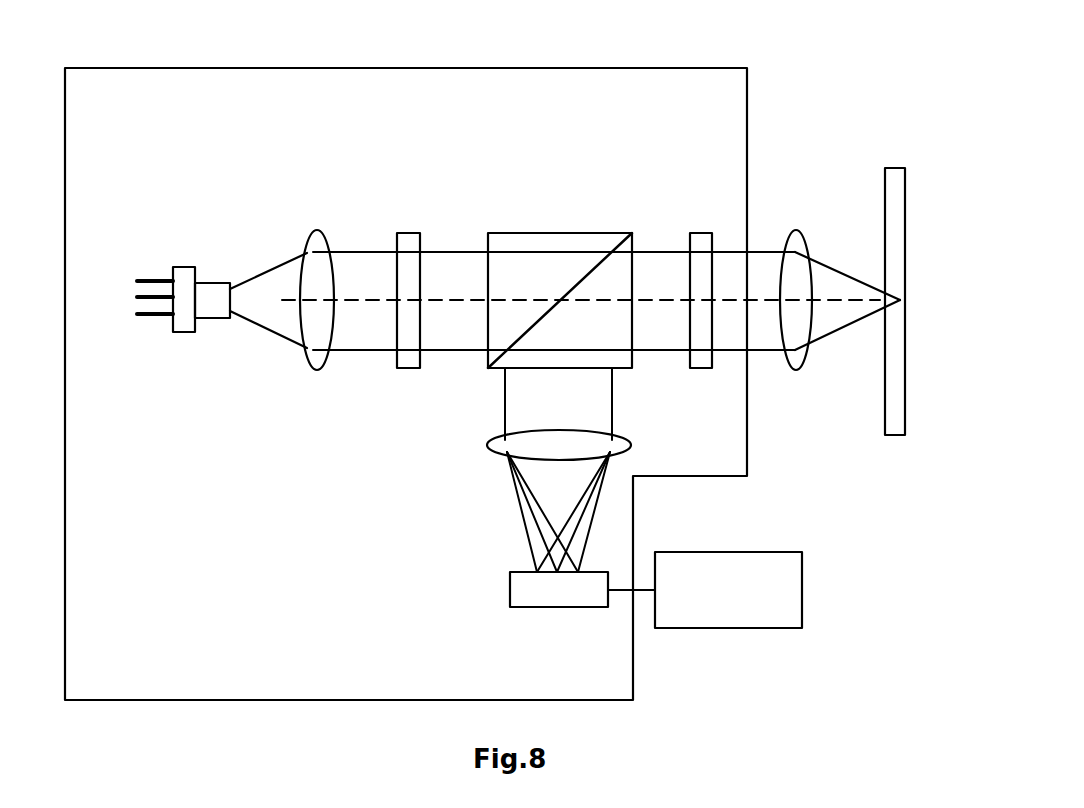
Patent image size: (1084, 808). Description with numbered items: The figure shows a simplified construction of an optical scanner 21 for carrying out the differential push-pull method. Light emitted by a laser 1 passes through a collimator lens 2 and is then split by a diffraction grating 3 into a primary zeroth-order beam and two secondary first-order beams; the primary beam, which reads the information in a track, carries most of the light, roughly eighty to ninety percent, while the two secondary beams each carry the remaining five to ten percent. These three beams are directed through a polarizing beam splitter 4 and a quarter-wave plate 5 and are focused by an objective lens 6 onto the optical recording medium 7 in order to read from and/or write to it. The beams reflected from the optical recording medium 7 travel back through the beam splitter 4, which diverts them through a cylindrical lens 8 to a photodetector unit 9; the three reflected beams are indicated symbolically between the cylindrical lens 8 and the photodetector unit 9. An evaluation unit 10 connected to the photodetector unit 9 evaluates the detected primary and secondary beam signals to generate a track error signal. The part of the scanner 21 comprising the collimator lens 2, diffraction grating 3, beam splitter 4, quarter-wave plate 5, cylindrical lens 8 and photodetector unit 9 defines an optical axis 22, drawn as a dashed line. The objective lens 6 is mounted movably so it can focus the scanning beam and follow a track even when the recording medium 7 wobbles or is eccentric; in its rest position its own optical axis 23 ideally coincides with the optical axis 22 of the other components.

The laser 1 is at (137, 300).
The collimator lens 2 is at (316, 272).
The diffraction grating 3 is at (408, 260).
The polarizing beam splitter 4 is at (550, 277).
The quarter-wave plate 5 is at (702, 243).
The objective lens 6 is at (798, 270).
The optical recording medium 7 is at (893, 300).
The cylindrical lens 8 is at (593, 445).
The photodetector unit 9 is at (542, 598).
The evaluation unit 10 is at (750, 567).
The optical scanner 21 is at (553, 68).
The optical axis 22 is at (459, 301).
The optical axis of the objective lens 23 is at (862, 303).